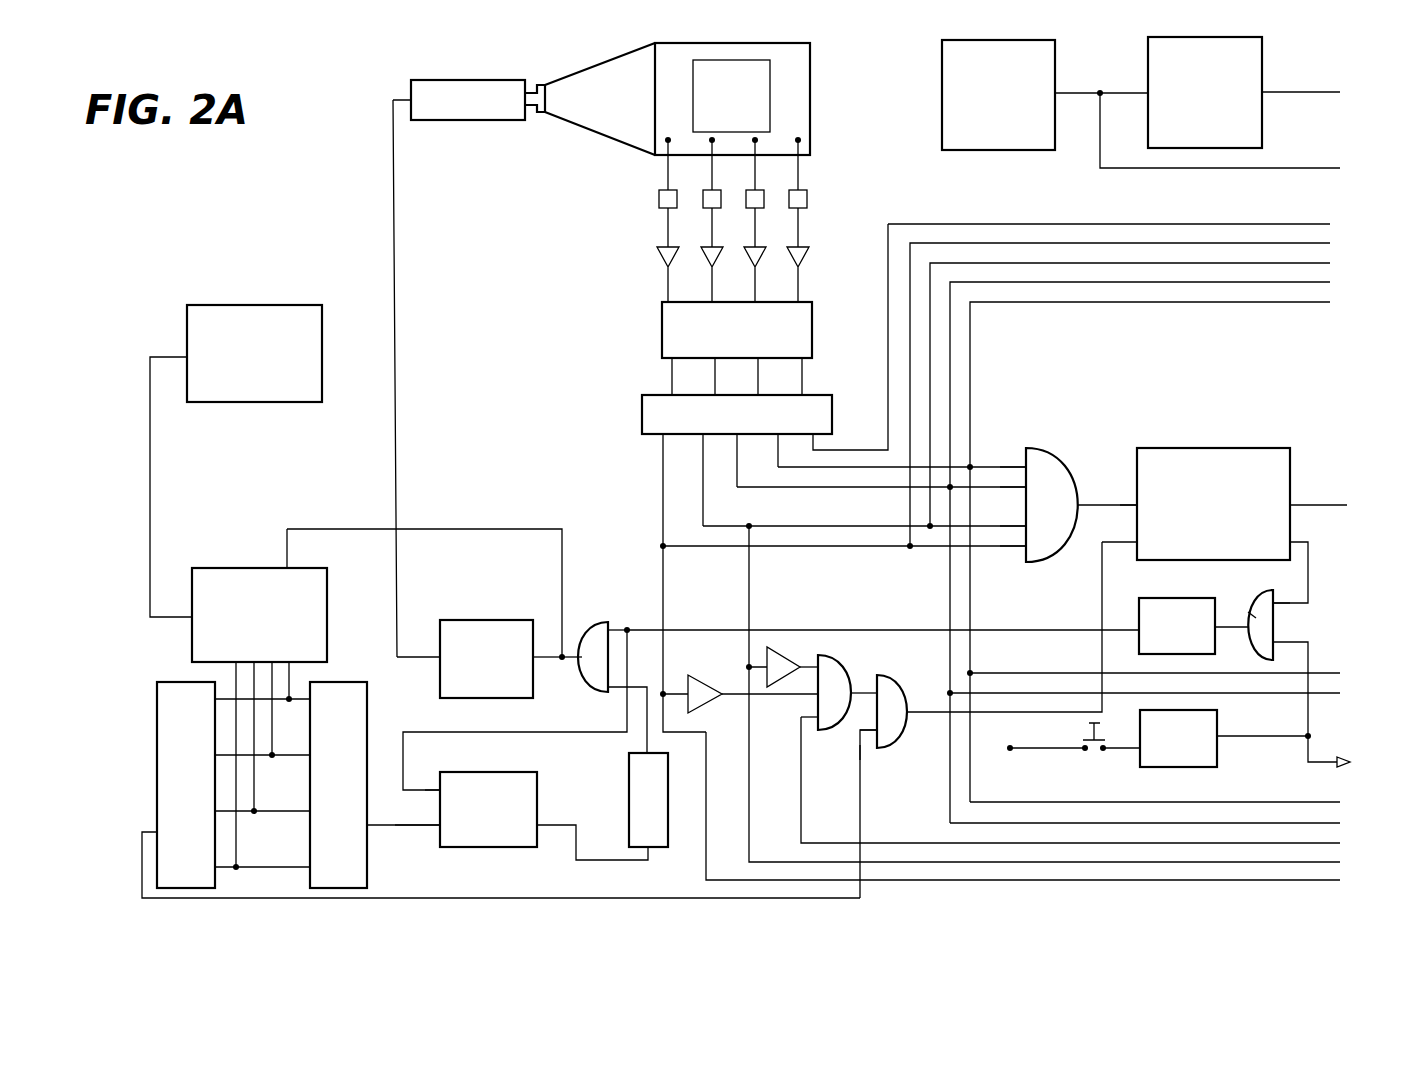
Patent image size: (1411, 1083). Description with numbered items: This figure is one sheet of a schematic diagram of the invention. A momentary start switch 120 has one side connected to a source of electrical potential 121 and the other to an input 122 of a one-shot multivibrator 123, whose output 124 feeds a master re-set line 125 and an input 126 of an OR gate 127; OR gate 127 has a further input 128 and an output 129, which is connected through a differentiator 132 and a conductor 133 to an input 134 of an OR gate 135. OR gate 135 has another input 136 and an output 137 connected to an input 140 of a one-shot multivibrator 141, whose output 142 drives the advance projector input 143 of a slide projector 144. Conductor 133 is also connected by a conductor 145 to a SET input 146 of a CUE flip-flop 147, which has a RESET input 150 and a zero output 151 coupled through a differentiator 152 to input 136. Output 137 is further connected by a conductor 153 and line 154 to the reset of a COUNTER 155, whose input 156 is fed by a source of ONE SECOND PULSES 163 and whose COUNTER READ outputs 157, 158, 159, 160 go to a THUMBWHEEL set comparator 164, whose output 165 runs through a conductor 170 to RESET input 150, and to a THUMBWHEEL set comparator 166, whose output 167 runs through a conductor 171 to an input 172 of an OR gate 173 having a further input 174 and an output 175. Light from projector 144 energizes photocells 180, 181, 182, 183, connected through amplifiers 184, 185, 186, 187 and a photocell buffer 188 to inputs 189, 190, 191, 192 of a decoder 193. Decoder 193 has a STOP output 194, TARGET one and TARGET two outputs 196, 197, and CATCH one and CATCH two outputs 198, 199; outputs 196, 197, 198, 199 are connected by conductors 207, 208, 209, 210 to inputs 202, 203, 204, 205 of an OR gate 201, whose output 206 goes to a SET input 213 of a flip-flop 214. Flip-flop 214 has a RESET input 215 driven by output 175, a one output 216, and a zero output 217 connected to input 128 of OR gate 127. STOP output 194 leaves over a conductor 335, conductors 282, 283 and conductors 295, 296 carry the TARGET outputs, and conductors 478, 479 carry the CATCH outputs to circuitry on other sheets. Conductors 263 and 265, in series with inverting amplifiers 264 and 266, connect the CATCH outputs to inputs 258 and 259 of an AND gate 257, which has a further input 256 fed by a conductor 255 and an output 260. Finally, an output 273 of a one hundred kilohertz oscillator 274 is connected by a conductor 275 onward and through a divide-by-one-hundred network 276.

The advance projector input 143 is at (411, 96).
The slide projector 144 is at (810, 88).
The photocell 180 is at (661, 192).
The photocell 181 is at (705, 195).
The photocell 182 is at (746, 195).
The photocell 183 is at (789, 195).
The amplifier 184 is at (660, 250).
The amplifier 185 is at (701, 252).
The amplifier 186 is at (744, 252).
The amplifier 187 is at (789, 252).
The photocell buffer 188 is at (662, 338).
The decoder input 189 is at (672, 390).
The decoder input 190 is at (715, 392).
The decoder input 191 is at (758, 392).
The decoder input 192 is at (802, 392).
The decoder 193 is at (642, 424).
The STOP output 194 is at (813, 440).
The TARGET 1 output 196 is at (778, 440).
The TARGET 2 output 197 is at (737, 440).
The CATCH 1 output 198 is at (703, 440).
The CATCH 2 output 199 is at (663, 440).
The conductor 207 is at (855, 468).
The conductor 208 is at (777, 488).
The conductor 209 is at (703, 480).
The conductor 210 is at (663, 497).
The OR gate 201 is at (1058, 460).
The OR gate input 202 is at (1022, 465).
The OR gate input 203 is at (1022, 486).
The OR gate input 204 is at (1022, 524).
The OR gate input 205 is at (1022, 544).
The OR gate output 206 is at (1085, 498).
The SET input 213 is at (1137, 505).
The flip-flop 214 is at (1205, 448).
The RESET input 215 is at (1137, 542).
The "1" output 216 is at (1290, 505).
The "0" output 217 is at (1290, 542).
The conductor 335 is at (1330, 224).
The conductor 478 is at (1330, 243).
The conductor 479 is at (1330, 263).
The conductor 295 is at (1330, 282).
The conductor 282 is at (1330, 302).
The conductor 283 is at (1030, 673).
The conductor 296 is at (1340, 693).
The differentiator 132 is at (1172, 598).
The conductor 133 is at (882, 630).
The OR gate input 126 is at (1280, 643).
The OR gate 127 is at (1252, 635).
The OR gate input 128 is at (1280, 603).
The OR gate output 129 is at (1254, 618).
The master re-set line 125 is at (1322, 765).
The one-shot multivibrator output 124 is at (1217, 738).
The one-shot multivibrator 123 is at (1187, 767).
The one-shot multivibrator input 122 is at (1135, 750).
The source of electrical potential 121 is at (1010, 752).
The momentary start switch 120 is at (1088, 730).
The oscillator output 273 is at (1057, 92).
The 100 Khz oscillator 274 is at (985, 150).
The conductor 275 is at (1165, 170).
The divide by 100 network 276 is at (1262, 60).
The source of ONE SECOND PULSES 163 is at (262, 305).
The counter input 156 is at (192, 612).
The COUNTER 155 is at (222, 567).
The conductor 153 is at (460, 529).
The counter reset line 154 is at (292, 568).
The COUNTER READ output 157 is at (236, 662).
The COUNTER READ output 158 is at (254, 662).
The COUNTER READ output 159 is at (272, 662).
The COUNTER READ output 160 is at (289, 662).
The THUMBWHEEL set comparator 166 is at (157, 700).
The THUMBWHEEL set comparator 164 is at (367, 726).
The comparator output 167 is at (145, 832).
The conductor 171 is at (617, 898).
The comparator output 165 is at (400, 818).
The conductor 170 is at (402, 827).
The one-shot multivibrator 141 is at (490, 620).
The one-shot multivibrator output 142 is at (437, 652).
The one-shot multivibrator input 140 is at (535, 640).
The OR gate output 137 is at (577, 660).
The OR gate input 134 is at (614, 625).
The OR gate 135 is at (592, 632).
The OR gate input 136 is at (608, 695).
The conductor 145 is at (562, 732).
The SET input 146 is at (440, 790).
The CUE flip-flop 147 is at (488, 772).
The RESET input 150 is at (428, 830).
The "0" output 151 is at (537, 830).
The differentiator 152 is at (629, 790).
The conductor 265 is at (663, 590).
The conductor 263 is at (749, 590).
The inverting amplifier 266 is at (705, 675).
The inverting amplifier 264 is at (788, 650).
The AND gate input 259 is at (818, 694).
The AND gate input 258 is at (818, 662).
The AND gate 257 is at (849, 666).
The AND gate output 260 is at (887, 676).
The AND gate input 256 is at (801, 717).
The conductor 255 is at (1340, 843).
The OR gate 173 is at (912, 690).
The OR gate input 174 is at (863, 716).
The OR gate output 175 is at (907, 728).
The OR gate input 172 is at (870, 750).